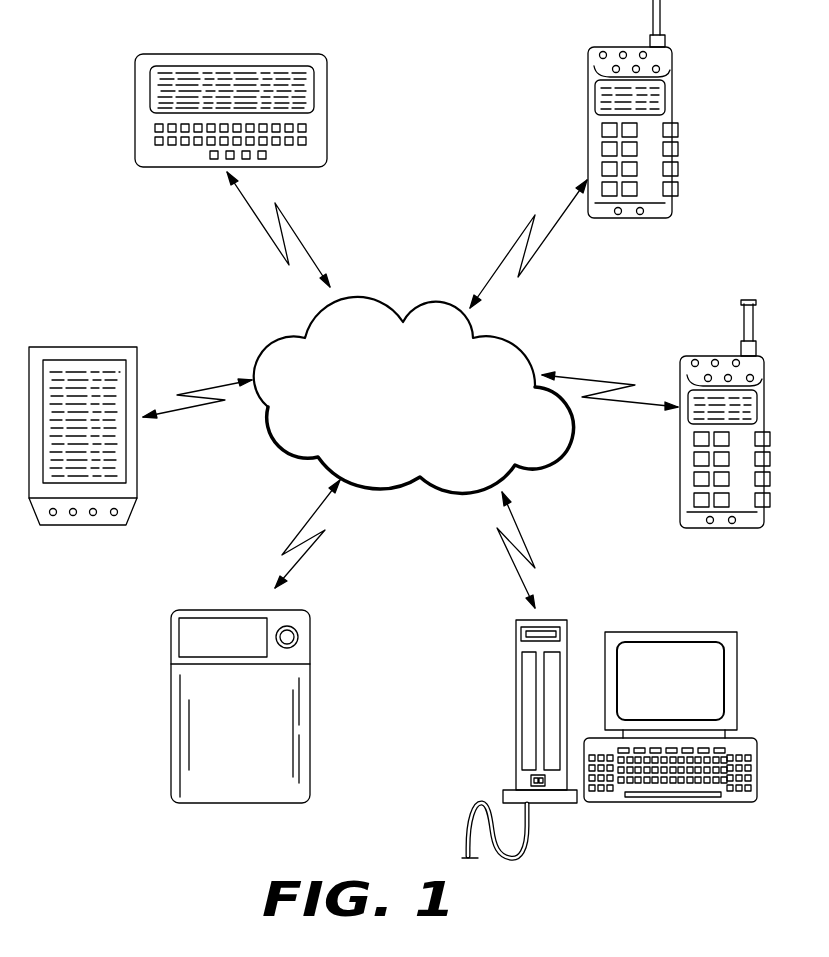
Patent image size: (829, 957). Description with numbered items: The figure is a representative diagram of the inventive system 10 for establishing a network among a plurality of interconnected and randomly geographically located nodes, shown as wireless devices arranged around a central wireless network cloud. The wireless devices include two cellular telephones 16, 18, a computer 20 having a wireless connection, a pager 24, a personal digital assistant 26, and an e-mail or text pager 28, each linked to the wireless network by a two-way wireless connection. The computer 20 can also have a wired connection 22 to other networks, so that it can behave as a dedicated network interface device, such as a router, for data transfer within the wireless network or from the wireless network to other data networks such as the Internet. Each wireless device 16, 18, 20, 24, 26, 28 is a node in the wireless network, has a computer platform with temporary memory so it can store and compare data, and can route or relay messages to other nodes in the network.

The system 10 is at (377, 842).
The cellular telephone 16 is at (588, 52).
The cellular telephone 18 is at (695, 356).
The computer 20 is at (640, 632).
The wired connection 22 is at (540, 839).
The pager 24 is at (171, 620).
The personal digital assistant (PDA) 26 is at (110, 347).
The e-mail or text pager 28 is at (327, 67).